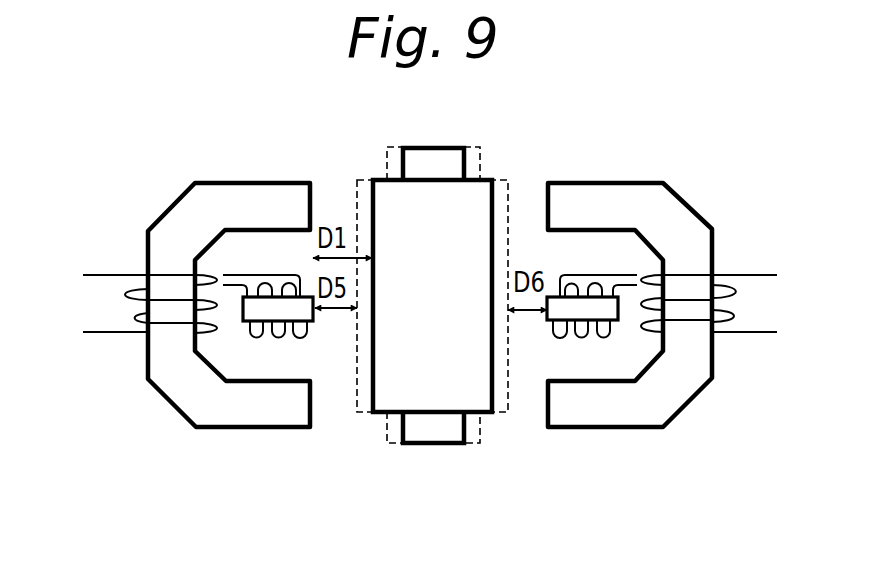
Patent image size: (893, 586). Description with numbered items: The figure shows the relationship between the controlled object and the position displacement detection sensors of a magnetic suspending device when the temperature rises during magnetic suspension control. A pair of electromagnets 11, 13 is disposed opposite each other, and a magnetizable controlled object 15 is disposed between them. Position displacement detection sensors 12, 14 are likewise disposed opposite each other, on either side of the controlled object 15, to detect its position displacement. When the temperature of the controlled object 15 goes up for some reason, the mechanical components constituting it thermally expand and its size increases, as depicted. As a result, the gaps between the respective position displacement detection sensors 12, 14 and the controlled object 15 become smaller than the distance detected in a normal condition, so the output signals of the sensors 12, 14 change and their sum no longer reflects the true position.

The electromagnet 11 is at (670, 220).
The position displacement detection sensor 12 is at (600, 308).
The electromagnet 13 is at (193, 238).
The position displacement detection sensor 14 is at (263, 310).
The controlled object 15 is at (465, 365).